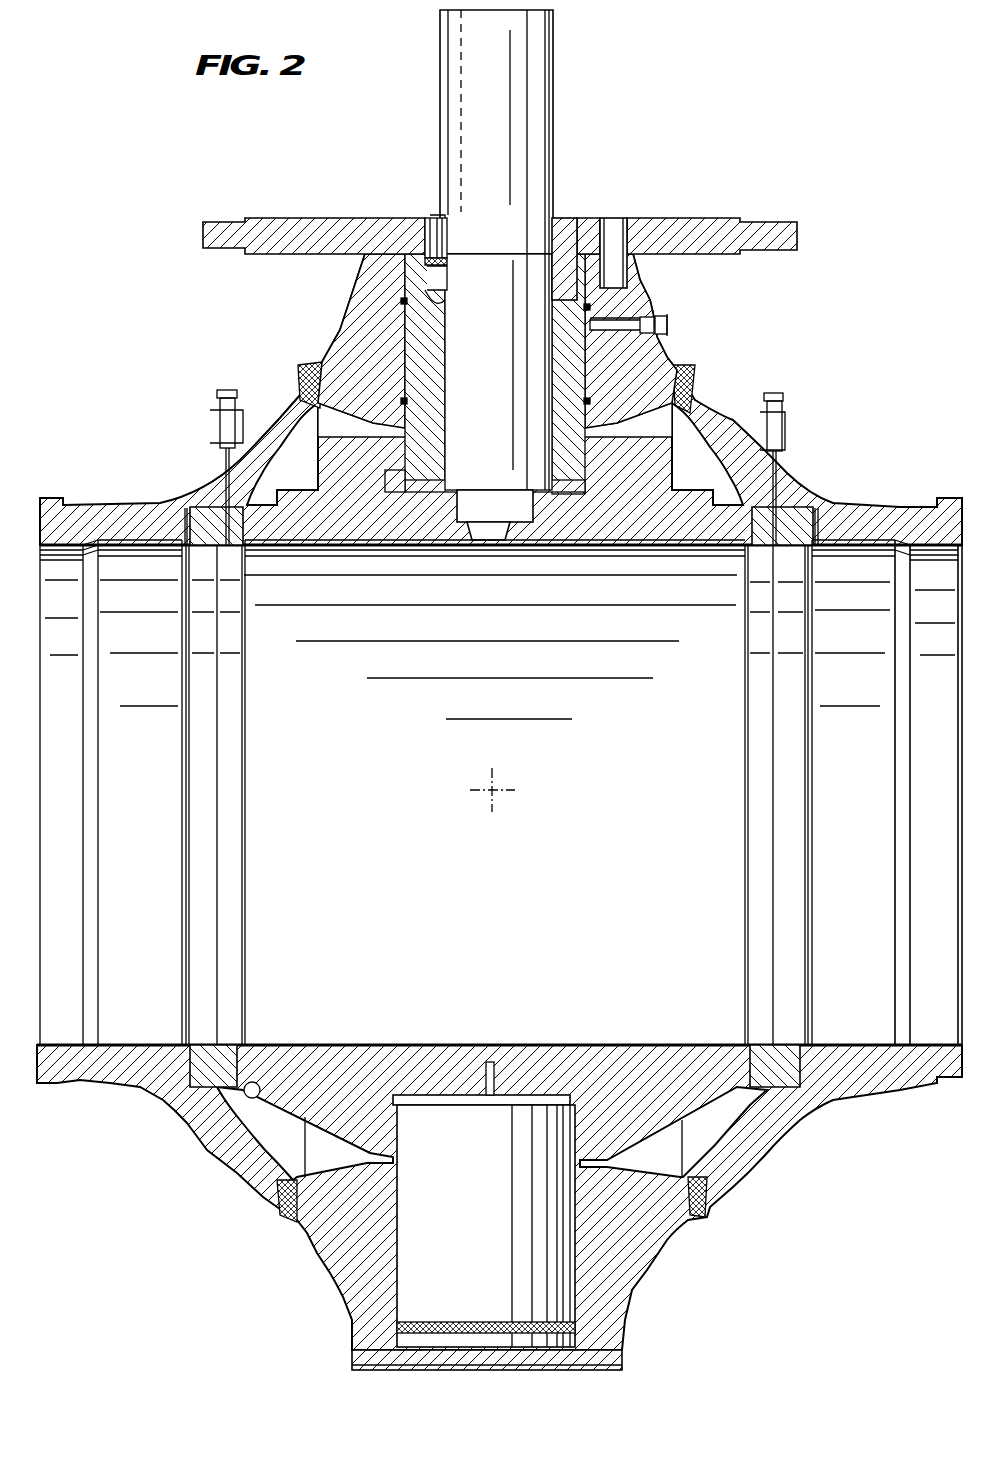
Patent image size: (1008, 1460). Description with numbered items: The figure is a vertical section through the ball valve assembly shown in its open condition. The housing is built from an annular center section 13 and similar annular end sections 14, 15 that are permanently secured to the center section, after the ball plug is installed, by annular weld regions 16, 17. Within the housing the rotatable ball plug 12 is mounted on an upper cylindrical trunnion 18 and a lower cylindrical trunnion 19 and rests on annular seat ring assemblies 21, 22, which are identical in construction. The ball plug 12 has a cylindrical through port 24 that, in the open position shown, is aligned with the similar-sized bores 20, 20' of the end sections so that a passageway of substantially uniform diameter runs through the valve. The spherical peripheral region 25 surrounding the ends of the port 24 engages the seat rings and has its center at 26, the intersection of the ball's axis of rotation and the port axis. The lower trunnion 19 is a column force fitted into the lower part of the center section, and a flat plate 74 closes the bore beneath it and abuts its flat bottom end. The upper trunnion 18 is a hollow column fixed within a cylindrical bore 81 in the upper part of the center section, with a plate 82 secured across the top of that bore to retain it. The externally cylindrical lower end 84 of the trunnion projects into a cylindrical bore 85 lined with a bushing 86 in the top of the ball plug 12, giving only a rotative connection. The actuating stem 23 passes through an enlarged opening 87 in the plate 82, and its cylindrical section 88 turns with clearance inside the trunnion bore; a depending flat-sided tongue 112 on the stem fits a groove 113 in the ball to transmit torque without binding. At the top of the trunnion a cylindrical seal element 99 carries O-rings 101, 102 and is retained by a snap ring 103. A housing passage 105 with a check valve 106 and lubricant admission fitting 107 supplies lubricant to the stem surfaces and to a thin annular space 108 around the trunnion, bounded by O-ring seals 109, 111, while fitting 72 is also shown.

The ball plug 12 is at (340, 548).
The annular center section 13 is at (368, 320).
The annular end section 14 is at (298, 383).
The annular end section 15 is at (695, 394).
The annular weld region 16 is at (285, 1214).
The annular weld region 17 is at (700, 1215).
The upper cylindrical trunnion 18 is at (650, 362).
The lower cylindrical trunnion 19 is at (468, 1273).
The bore 20 is at (93, 1040).
The bore 20' is at (894, 1039).
The annular seat ring assembly 21 is at (215, 505).
The annular seat ring assembly 22 is at (790, 505).
The actuating stem 23 is at (553, 108).
The cylindrical through port 24 is at (660, 1045).
The peripheral region 25 is at (258, 1082).
The center 26 is at (497, 788).
The lubricant fitting 72 is at (225, 393).
The flat plate 74 is at (447, 1370).
The cylindrical bore 81 is at (598, 226).
The plate 82 is at (740, 218).
The externally cylindrical lower end 84 is at (405, 466).
The cylindrical bore 85 is at (600, 446).
The bushing 86 is at (420, 472).
The enlarged opening 87 is at (565, 218).
The cylindrical section 88 is at (495, 368).
The cylindrical seal element 99 is at (447, 293).
The O-ring 101 is at (447, 306).
The O-ring 102 is at (447, 279).
The snap ring 103 is at (447, 250).
The housing passage 105 is at (640, 305).
The check valve 106 is at (650, 316).
The lubricant admission fitting 107 is at (668, 325).
The thin annular space 108 is at (590, 372).
The O-ring seal 109 is at (400, 302).
The O-ring seal 111 is at (385, 422).
The tongue 112 is at (488, 530).
The groove 113 is at (525, 493).